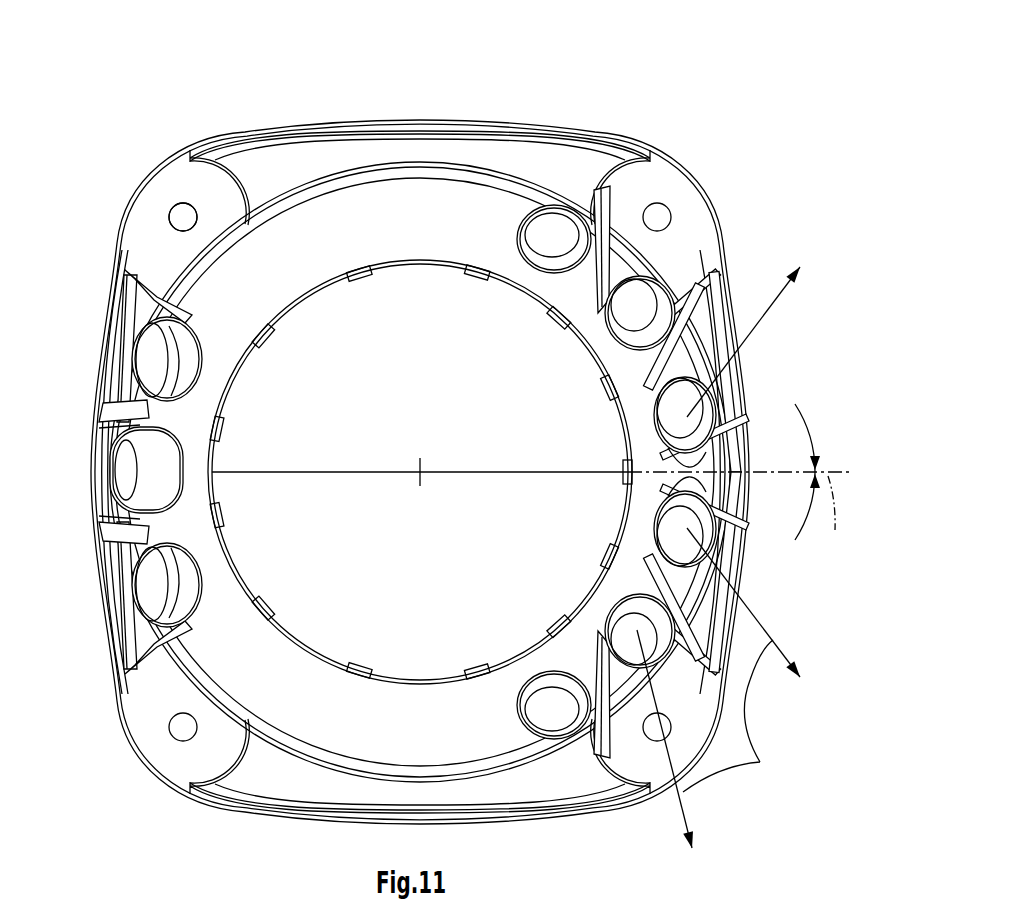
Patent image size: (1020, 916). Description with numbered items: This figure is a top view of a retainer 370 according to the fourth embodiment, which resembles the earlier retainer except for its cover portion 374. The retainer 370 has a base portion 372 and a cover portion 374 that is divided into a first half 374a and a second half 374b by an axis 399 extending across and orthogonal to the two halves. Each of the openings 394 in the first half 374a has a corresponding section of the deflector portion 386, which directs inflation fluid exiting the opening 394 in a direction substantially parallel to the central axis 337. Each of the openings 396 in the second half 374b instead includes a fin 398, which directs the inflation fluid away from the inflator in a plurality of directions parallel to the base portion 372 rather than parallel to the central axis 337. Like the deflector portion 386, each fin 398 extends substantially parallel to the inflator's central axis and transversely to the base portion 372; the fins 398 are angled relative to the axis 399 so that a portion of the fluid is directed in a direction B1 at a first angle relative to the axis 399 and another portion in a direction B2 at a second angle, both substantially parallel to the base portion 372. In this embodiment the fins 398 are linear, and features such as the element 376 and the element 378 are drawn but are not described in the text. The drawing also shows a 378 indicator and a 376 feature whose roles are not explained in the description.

The retainer 370 is at (672, 138).
The base portion 372 is at (560, 165).
The cover portion 374 is at (453, 168).
The first half of the cover portion 374a is at (318, 243).
The second half of the cover portion 374b is at (568, 650).
The mounting hole 376 is at (183, 217).
The ring direction 378 is at (305, 687).
The deflector portion 386 is at (130, 540).
The openings 394 is at (162, 472).
The openings 396 is at (634, 312).
The fin 398 is at (600, 268).
The central axis 337 is at (420, 472).
The axis 399 is at (834, 515).
The first direction B1 is at (718, 688).
The second direction B2 is at (746, 342).